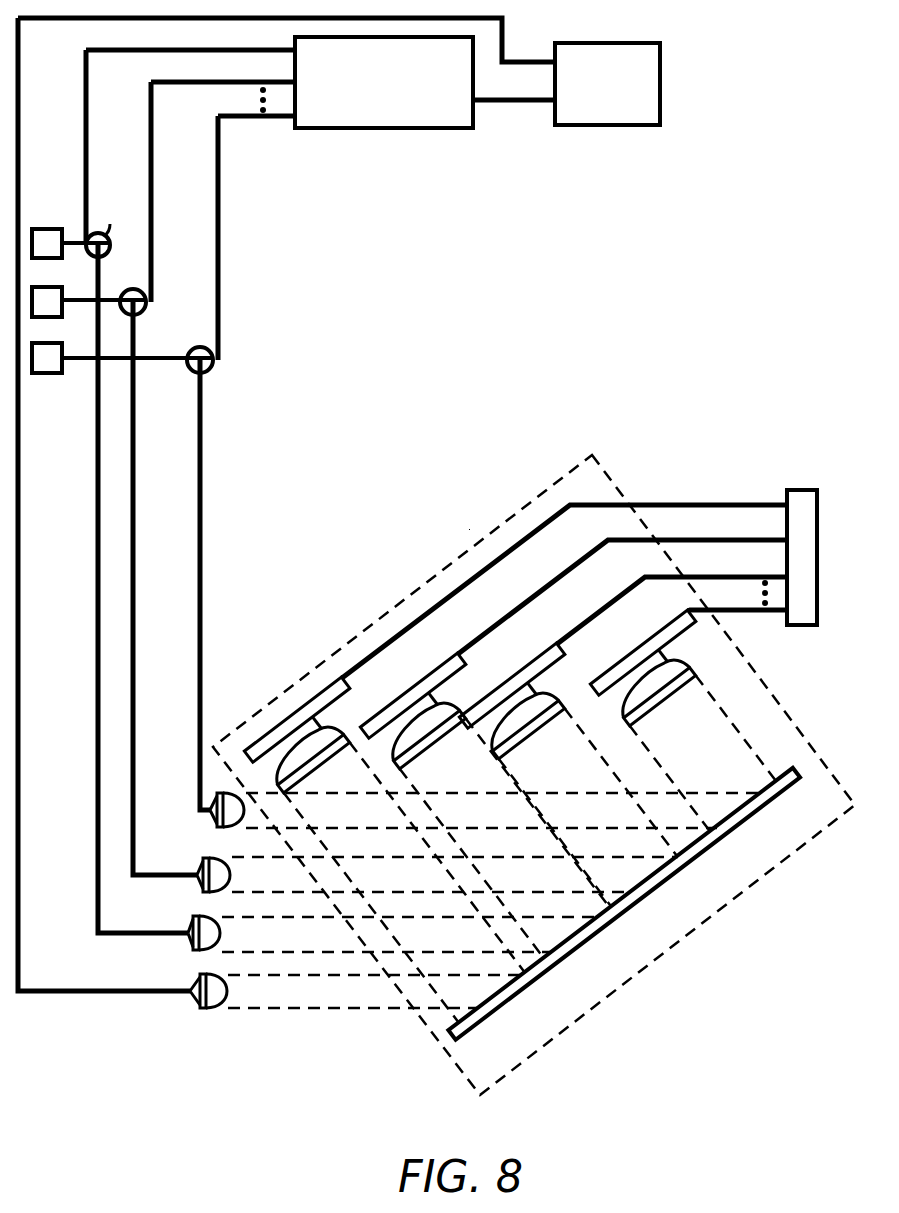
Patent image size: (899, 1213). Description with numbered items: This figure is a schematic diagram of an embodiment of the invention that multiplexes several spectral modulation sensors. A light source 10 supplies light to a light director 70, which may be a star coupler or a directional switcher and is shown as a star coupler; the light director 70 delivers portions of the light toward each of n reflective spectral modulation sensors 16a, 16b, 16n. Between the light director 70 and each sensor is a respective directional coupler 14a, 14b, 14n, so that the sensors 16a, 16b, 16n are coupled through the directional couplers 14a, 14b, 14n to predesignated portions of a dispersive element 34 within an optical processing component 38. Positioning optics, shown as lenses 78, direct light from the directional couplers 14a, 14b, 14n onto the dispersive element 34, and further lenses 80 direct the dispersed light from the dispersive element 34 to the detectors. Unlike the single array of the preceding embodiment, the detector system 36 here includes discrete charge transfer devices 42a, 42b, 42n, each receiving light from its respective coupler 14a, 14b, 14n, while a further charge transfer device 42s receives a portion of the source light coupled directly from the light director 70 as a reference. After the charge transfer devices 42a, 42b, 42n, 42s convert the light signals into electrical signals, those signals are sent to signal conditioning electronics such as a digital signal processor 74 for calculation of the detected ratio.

The light source 10 is at (661, 100).
The light director 70 is at (476, 118).
The digital signal processor 74 is at (793, 490).
The directional coupler 14a is at (98, 232).
The directional coupler 14b is at (146, 298).
The directional coupler 14n is at (213, 358).
The spectral modulation sensor 16a is at (42, 229).
The spectral modulation sensor 16b is at (40, 287).
The spectral modulation sensor 16n is at (50, 373).
The detector system 36 is at (464, 524).
The optical processing component 38 is at (782, 700).
The charge transfer device 42s is at (345, 679).
The charge transfer device 42a is at (461, 660).
The charge transfer device 42b is at (560, 650).
The charge transfer device 42n is at (676, 636).
The lens 80 is at (318, 762).
The lens 78 is at (224, 798).
The dispersive element 34 is at (764, 806).